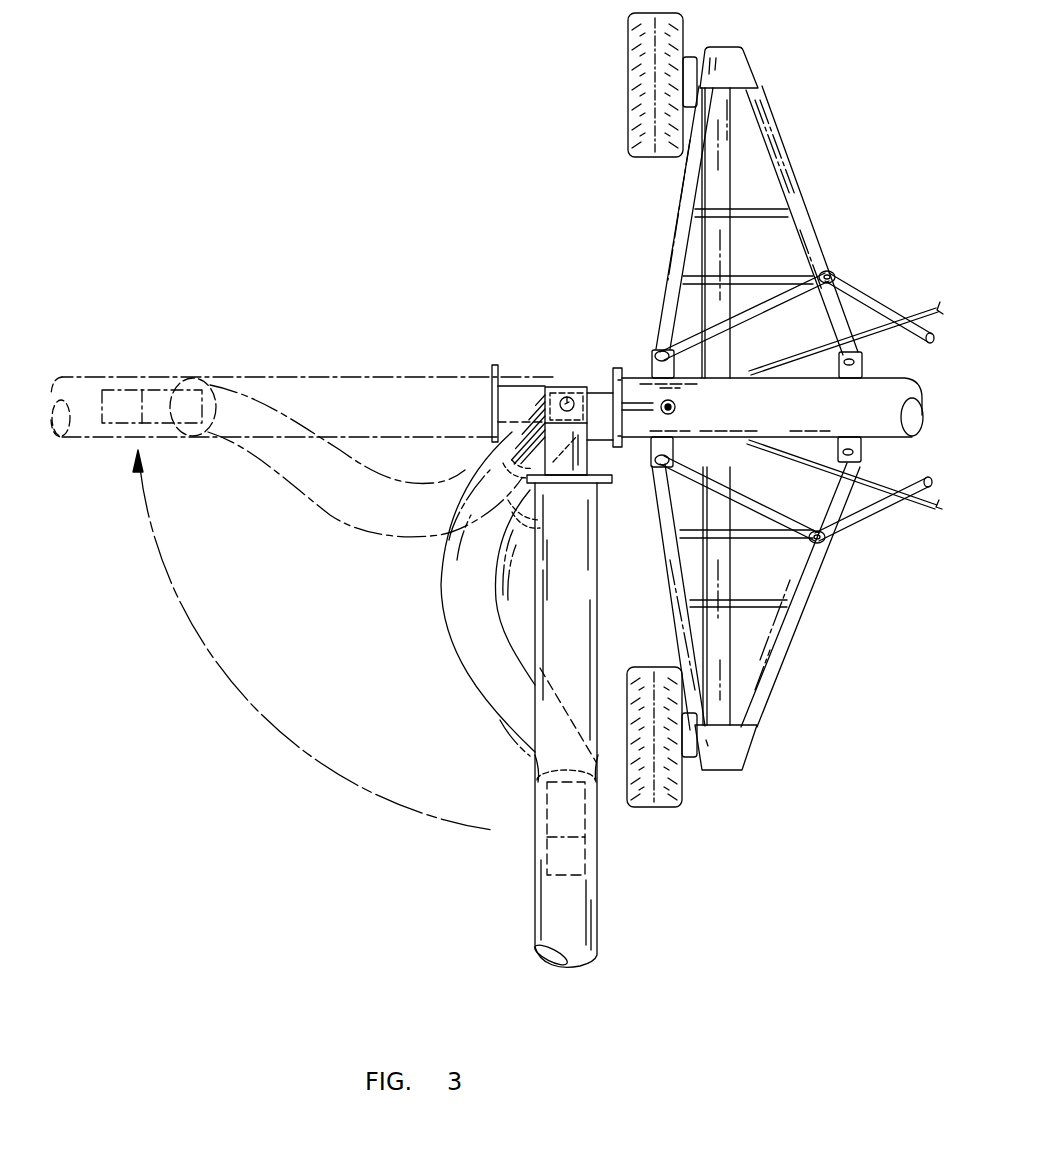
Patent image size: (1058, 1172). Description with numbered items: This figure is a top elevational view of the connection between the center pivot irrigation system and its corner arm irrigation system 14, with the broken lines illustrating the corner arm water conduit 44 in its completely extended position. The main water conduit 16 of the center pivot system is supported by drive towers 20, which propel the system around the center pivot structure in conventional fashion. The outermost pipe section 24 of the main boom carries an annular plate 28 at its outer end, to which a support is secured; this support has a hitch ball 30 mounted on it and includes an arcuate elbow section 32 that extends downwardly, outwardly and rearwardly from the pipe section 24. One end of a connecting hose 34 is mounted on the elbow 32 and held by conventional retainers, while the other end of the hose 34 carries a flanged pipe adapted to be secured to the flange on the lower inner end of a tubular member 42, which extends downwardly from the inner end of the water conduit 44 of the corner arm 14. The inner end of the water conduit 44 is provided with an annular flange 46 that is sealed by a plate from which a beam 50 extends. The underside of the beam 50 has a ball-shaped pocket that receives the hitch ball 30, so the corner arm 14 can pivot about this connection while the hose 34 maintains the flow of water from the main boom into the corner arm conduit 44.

The corner arm irrigation system 14 is at (505, 869).
The main water conduit 16 is at (890, 292).
The drive towers 20 is at (780, 643).
The outermost pipe section 24 is at (836, 418).
The annular plate 28 is at (632, 374).
The hitch ball 30 is at (562, 385).
The elbow section 32 is at (487, 420).
The connecting hose 34 is at (473, 633).
The tubular member 42 is at (569, 822).
The water conduit 44 is at (352, 383).
The annular flange 46 is at (607, 484).
The beam 50 is at (593, 383).